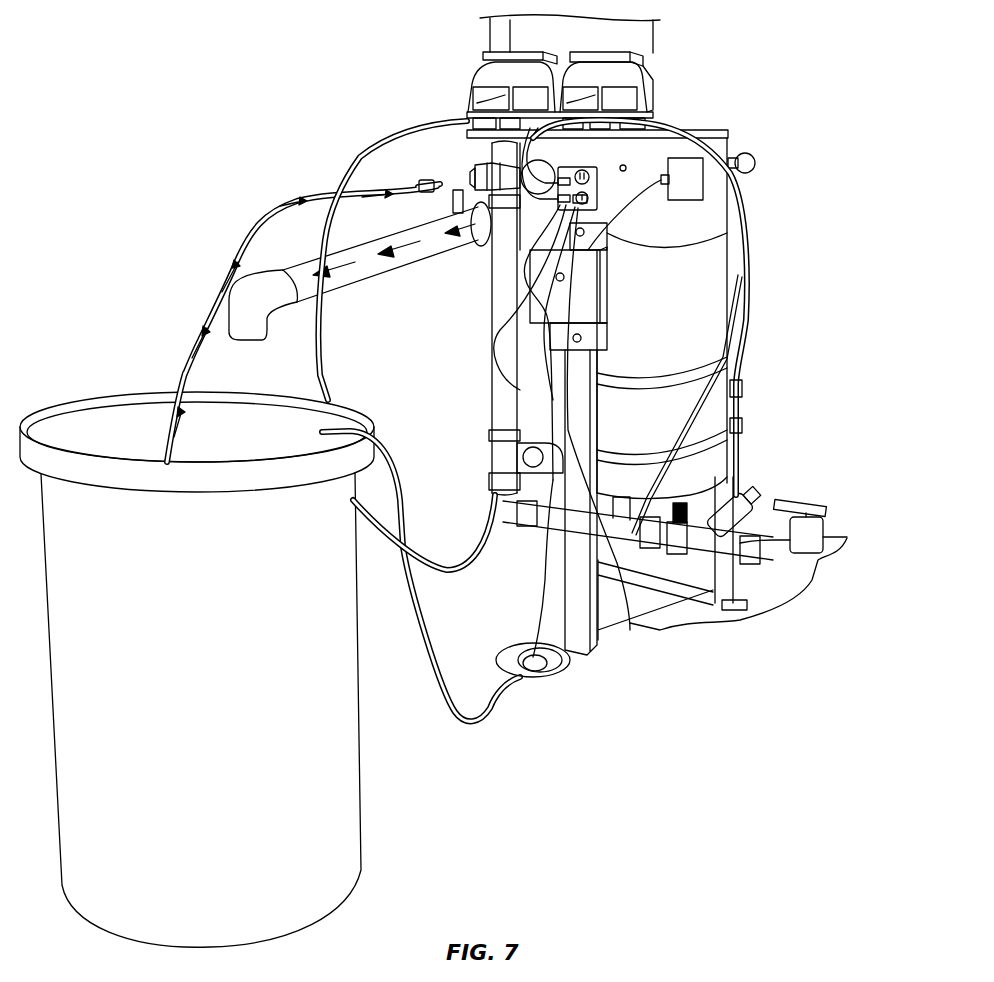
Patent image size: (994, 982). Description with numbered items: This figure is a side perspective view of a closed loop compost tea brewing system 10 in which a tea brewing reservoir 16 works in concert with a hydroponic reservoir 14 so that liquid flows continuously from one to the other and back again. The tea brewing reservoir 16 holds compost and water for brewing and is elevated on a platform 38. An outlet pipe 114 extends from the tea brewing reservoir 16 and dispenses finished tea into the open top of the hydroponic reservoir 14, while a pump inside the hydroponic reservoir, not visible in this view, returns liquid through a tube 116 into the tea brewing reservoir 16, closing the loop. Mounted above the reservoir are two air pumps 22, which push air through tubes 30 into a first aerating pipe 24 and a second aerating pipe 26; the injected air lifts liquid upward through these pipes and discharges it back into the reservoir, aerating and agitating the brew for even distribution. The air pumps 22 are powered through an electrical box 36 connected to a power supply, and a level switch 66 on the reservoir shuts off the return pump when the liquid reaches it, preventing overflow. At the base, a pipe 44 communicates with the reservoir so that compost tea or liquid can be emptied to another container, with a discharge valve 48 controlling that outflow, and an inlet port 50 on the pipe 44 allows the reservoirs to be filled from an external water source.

The closed loop compost tea brewing system 10 is at (117, 243).
The hydroponic reservoir 14 is at (224, 711).
The tea brewing reservoir 16 is at (678, 327).
The air pump 22 is at (480, 72).
The first aerating pipe 24 is at (733, 282).
The second aerating pipe 26 is at (503, 308).
The tube 30 is at (353, 167).
The electrical box 36 is at (583, 172).
The platform 38 is at (728, 577).
The pipe 44 is at (697, 540).
The discharge valve 48 is at (800, 510).
The inlet port 50 is at (758, 493).
The level switch 66 is at (690, 197).
The outlet pipe 114 is at (363, 268).
The tube 116 is at (185, 373).